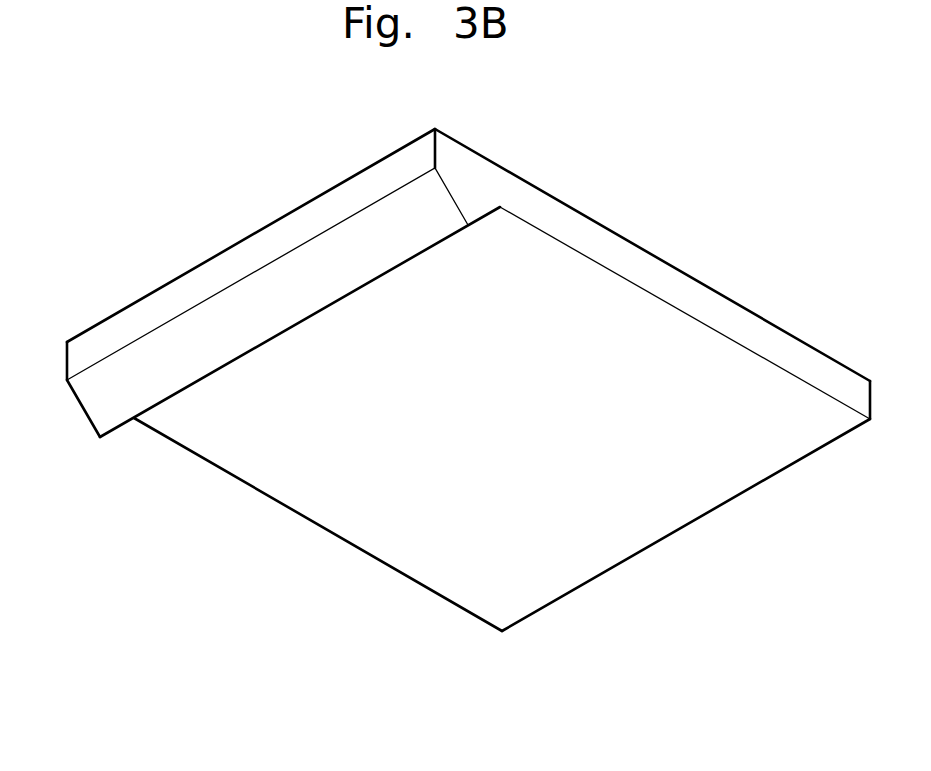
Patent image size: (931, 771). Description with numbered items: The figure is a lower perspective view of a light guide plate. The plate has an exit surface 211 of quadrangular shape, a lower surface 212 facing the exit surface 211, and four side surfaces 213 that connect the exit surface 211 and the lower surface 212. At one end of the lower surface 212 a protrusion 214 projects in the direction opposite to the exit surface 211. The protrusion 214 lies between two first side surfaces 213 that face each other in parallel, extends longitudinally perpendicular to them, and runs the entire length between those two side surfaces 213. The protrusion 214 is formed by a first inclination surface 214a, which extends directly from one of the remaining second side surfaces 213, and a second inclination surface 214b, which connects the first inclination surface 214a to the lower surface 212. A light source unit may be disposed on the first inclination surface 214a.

The exit surface 211 is at (665, 258).
The lower surface 212 is at (373, 528).
The side surface 213 is at (683, 530).
The protrusion 214 is at (264, 377).
The first inclination surface 214a is at (83, 414).
The second inclination surface 214b is at (120, 430).